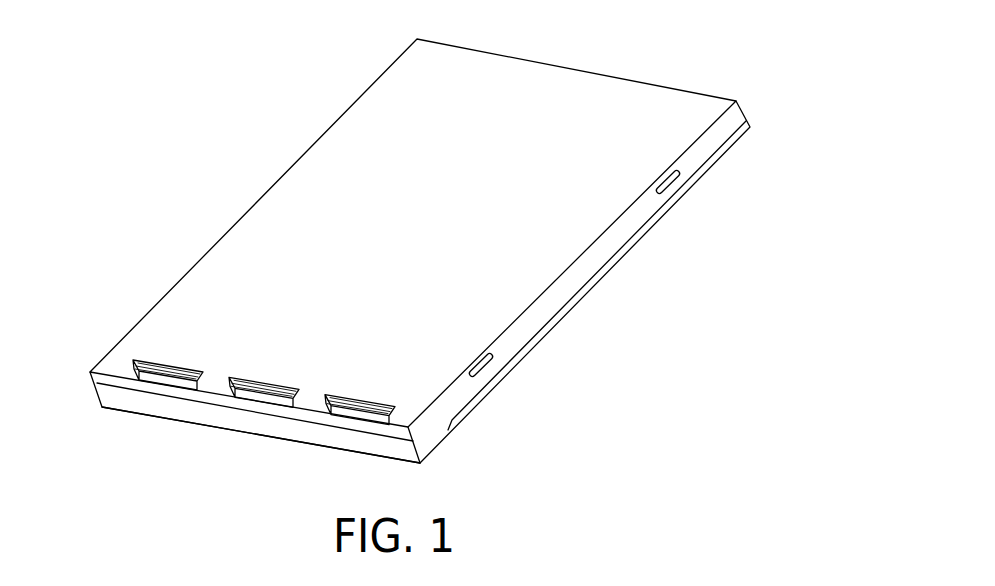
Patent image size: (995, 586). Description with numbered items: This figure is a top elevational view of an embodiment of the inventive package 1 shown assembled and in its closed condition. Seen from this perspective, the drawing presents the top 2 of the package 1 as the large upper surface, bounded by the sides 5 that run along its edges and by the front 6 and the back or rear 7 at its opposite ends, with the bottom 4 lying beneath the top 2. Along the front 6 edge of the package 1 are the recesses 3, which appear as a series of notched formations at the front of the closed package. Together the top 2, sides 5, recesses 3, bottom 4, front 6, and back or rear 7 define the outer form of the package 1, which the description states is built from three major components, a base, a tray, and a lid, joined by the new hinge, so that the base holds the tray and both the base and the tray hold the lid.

The package 1 is at (263, 87).
The top 2 is at (343, 222).
The recesses 3 is at (306, 421).
The bottom 4 is at (556, 341).
The sides 5 is at (195, 221).
The front 6 is at (562, 62).
The back or rear 7 is at (262, 444).